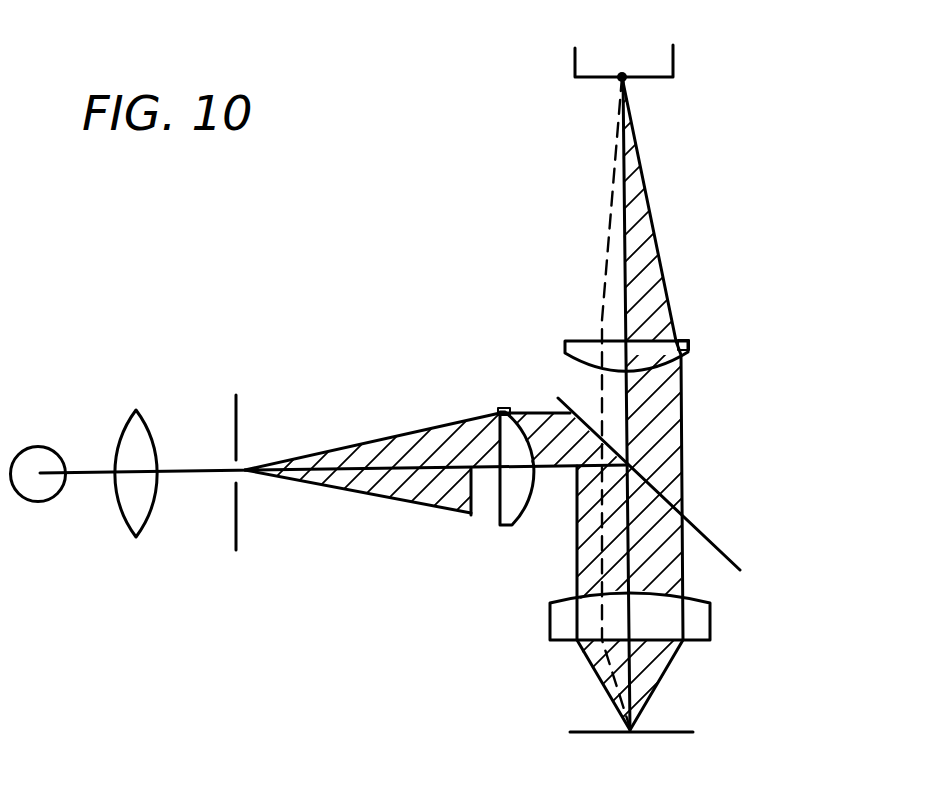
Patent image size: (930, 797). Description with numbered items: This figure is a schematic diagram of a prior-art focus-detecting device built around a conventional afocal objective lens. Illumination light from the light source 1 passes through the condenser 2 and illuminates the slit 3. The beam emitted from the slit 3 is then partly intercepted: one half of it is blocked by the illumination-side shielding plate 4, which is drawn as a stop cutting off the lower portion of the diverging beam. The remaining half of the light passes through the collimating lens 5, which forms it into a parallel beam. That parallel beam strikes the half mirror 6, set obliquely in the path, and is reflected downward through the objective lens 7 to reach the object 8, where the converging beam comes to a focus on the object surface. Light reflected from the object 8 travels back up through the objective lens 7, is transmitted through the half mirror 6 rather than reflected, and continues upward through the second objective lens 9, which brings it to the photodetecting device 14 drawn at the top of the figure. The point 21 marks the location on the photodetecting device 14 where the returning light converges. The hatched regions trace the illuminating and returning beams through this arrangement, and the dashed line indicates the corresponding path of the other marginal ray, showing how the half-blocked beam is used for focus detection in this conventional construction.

The light source 1 is at (30, 455).
The condenser 2 is at (130, 448).
The slit 3 is at (237, 422).
The illumination-side shielding plate 4 is at (471, 527).
The collimating lens 5 is at (504, 420).
The half mirror 6 is at (725, 550).
The objective lens 7 is at (698, 620).
The object 8 is at (585, 733).
The second objective lens 9 is at (690, 345).
The photodetecting device 14 is at (585, 60).
The light receiving point 21 is at (627, 83).